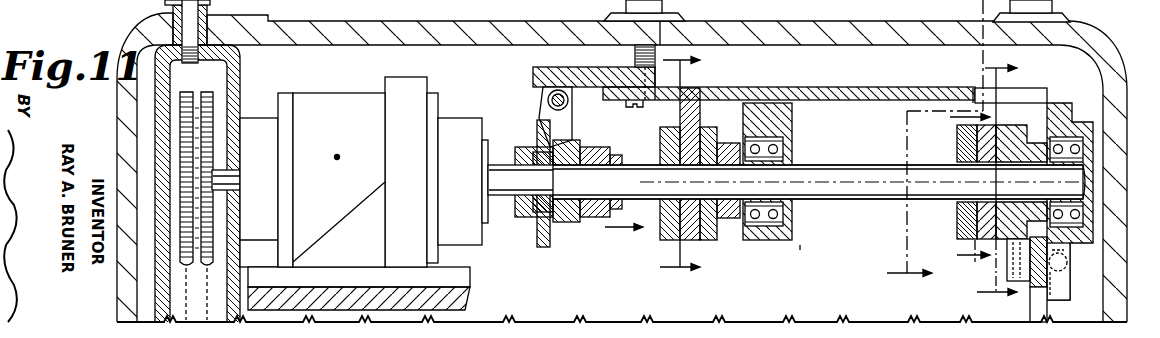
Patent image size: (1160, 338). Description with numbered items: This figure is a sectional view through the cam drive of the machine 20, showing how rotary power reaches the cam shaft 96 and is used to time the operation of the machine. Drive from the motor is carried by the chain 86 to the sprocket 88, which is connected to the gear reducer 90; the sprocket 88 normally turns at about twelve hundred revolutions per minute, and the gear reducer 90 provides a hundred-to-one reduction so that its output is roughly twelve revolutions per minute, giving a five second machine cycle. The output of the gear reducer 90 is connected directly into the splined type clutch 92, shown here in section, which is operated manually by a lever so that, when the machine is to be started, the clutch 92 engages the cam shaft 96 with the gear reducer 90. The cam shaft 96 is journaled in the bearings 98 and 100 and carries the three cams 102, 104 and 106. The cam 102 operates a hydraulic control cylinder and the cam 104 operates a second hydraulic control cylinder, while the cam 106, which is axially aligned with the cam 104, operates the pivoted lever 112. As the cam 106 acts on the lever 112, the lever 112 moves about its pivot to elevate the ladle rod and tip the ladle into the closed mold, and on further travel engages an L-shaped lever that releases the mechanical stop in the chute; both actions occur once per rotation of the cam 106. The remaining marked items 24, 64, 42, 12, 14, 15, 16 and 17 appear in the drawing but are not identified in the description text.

The machine 20 is at (295, 20).
The housing inner wall 24 is at (387, 50).
The mounting stud 64 is at (466, 25).
The chain 86 is at (208, 283).
The sprocket 88 is at (213, 97).
The gear reducer 90 is at (347, 94).
The splined type clutch 92 is at (590, 147).
The cam shaft 96 is at (826, 200).
The bearing 98 is at (790, 140).
The bearing 100 is at (1085, 146).
The cam 102 is at (680, 108).
The cam 104 is at (970, 230).
The cam 106 is at (1027, 125).
The pivoted lever 112 is at (1050, 277).
The compartment 42 is at (814, 272).
The section line 12 is at (921, 204).
The section line 14 is at (624, 242).
The section line 15 is at (695, 174).
The section line 16 is at (960, 142).
The section line 17 is at (999, 182).